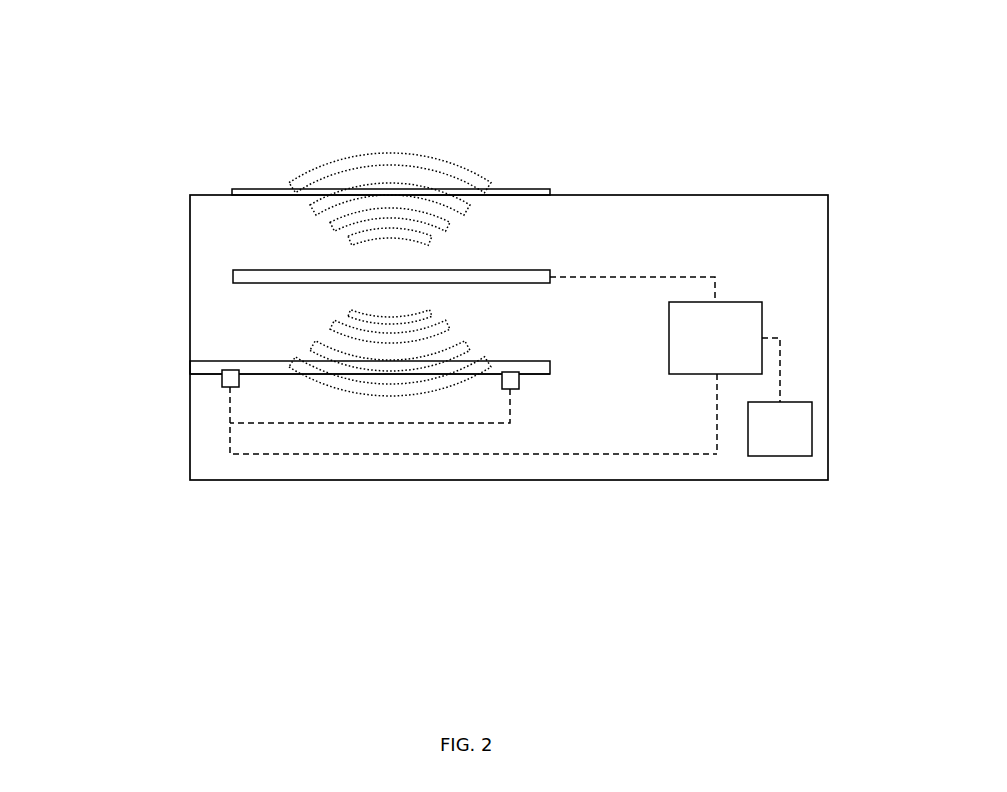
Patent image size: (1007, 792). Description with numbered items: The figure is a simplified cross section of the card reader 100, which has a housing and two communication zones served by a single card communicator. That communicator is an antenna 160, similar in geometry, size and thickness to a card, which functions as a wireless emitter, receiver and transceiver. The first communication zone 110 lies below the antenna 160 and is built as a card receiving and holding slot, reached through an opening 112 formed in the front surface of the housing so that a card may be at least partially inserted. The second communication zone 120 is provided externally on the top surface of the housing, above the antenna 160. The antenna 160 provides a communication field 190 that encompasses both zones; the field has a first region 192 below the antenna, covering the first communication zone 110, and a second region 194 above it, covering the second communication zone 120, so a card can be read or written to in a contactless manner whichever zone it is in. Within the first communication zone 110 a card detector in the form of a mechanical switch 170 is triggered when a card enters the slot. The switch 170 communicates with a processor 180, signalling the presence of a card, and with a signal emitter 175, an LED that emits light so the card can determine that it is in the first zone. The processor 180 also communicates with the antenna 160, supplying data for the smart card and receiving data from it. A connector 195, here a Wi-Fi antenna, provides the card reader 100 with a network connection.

The card reader 100 is at (278, 550).
The first communication zone 110 is at (278, 345).
The opening 112 is at (190, 370).
The second communication zone 120 is at (527, 170).
The antenna 160 is at (233, 276).
The switch 170 is at (222, 378).
The signal emitter 175 is at (510, 392).
The processor 180 is at (762, 313).
The communication field 190 is at (393, 120).
The first region 192 is at (516, 324).
The second region 194 is at (272, 227).
The connector 195 is at (812, 430).